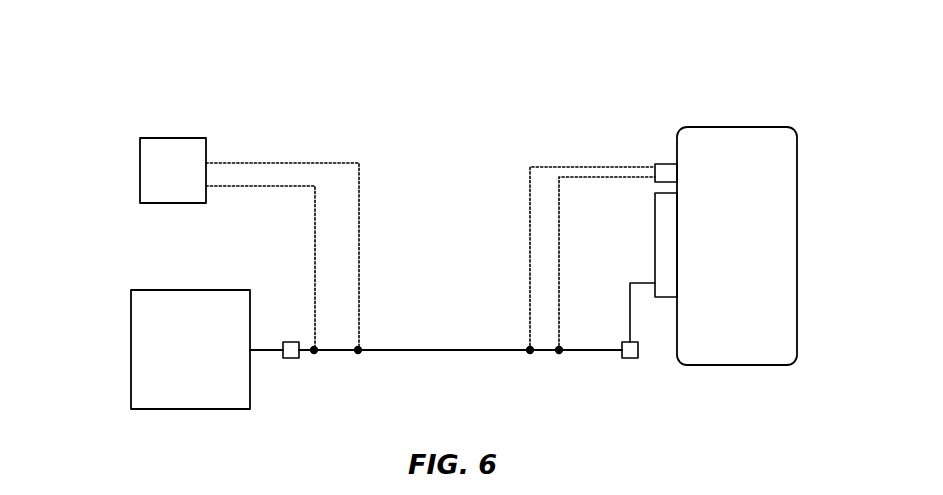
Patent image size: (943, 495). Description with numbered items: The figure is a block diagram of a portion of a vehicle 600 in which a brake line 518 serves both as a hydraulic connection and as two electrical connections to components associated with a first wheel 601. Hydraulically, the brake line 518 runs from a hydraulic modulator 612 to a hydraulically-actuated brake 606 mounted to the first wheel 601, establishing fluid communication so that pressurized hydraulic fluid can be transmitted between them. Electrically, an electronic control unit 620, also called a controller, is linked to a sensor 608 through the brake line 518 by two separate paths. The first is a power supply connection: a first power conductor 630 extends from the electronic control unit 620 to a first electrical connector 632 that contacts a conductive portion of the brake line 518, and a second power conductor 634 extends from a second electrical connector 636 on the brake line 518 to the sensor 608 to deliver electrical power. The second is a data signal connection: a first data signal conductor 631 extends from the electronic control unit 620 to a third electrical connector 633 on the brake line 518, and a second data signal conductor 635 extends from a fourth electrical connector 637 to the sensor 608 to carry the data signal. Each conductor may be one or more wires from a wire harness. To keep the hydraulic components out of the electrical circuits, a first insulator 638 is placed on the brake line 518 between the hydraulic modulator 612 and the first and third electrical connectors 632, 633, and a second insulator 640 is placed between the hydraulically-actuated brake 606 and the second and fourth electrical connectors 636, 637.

The vehicle 600 is at (122, 74).
The first wheel 601 is at (758, 127).
The hydraulically-actuated brake 606 is at (655, 258).
The sensor 608 is at (671, 163).
The hydraulic modulator 612 is at (211, 364).
The electronic control unit 620 is at (193, 184).
The brake line 518 is at (433, 350).
The first power conductor 630 is at (348, 163).
The first data signal conductor 631 is at (226, 187).
The first electrical connector 632 is at (360, 353).
The third electrical connector 633 is at (316, 353).
The second power conductor 634 is at (528, 220).
The second data signal conductor 635 is at (639, 180).
The second electrical connector 636 is at (528, 353).
The fourth electrical connector 637 is at (560, 353).
The first insulator 638 is at (291, 358).
The second insulator 640 is at (630, 358).